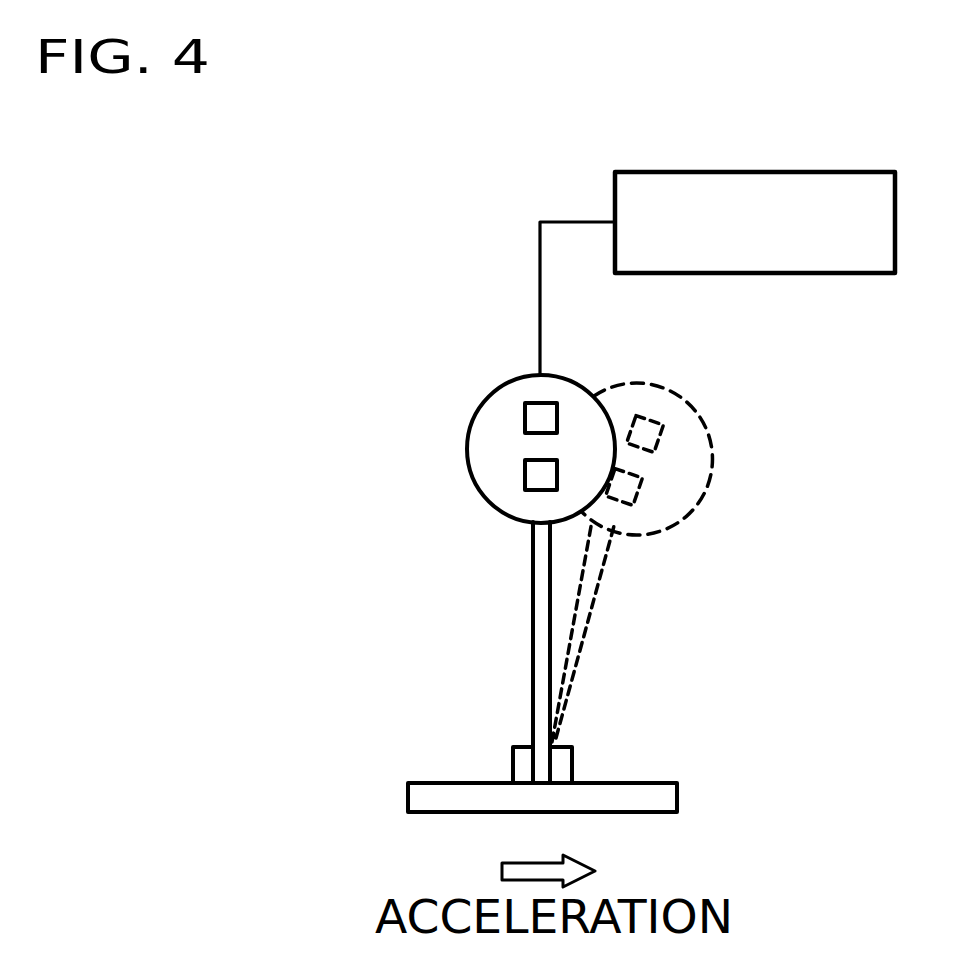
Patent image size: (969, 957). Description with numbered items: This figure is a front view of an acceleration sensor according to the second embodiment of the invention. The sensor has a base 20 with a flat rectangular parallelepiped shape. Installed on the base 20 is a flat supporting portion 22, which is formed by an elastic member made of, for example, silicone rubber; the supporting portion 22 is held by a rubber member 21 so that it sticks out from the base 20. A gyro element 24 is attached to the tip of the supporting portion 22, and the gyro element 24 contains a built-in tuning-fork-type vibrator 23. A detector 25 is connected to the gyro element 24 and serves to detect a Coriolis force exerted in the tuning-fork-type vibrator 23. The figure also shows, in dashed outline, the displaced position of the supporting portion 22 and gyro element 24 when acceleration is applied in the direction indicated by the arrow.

The base 20 is at (443, 802).
The rubber member 21 is at (513, 768).
The supporting portion 22 is at (537, 631).
The tuning-fork-type vibrator 23 is at (530, 403).
The gyro element 24 is at (477, 447).
The detector 25 is at (783, 172).